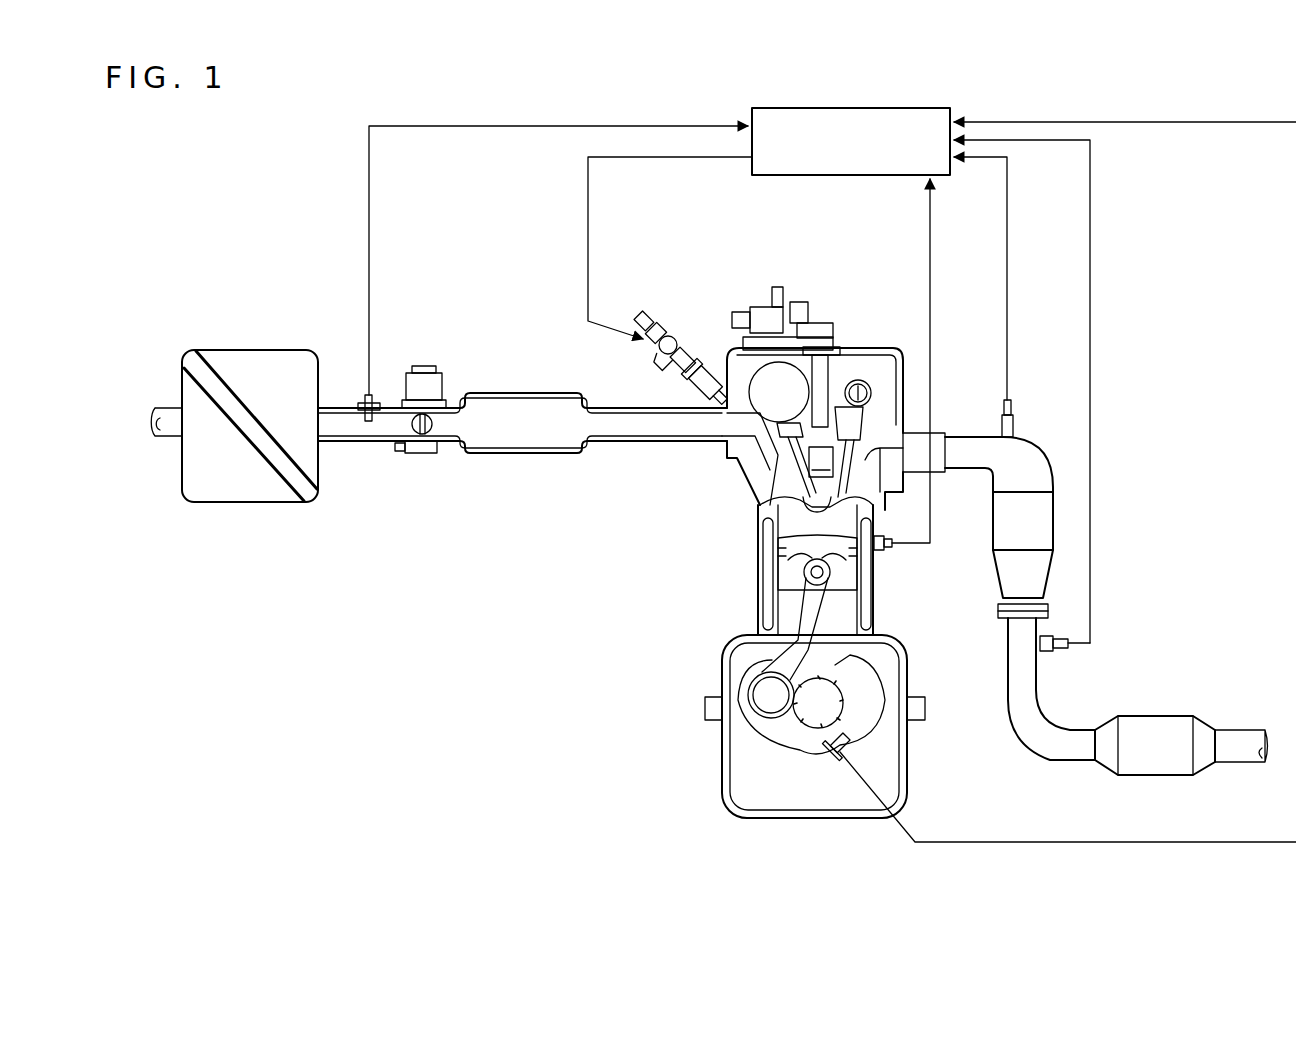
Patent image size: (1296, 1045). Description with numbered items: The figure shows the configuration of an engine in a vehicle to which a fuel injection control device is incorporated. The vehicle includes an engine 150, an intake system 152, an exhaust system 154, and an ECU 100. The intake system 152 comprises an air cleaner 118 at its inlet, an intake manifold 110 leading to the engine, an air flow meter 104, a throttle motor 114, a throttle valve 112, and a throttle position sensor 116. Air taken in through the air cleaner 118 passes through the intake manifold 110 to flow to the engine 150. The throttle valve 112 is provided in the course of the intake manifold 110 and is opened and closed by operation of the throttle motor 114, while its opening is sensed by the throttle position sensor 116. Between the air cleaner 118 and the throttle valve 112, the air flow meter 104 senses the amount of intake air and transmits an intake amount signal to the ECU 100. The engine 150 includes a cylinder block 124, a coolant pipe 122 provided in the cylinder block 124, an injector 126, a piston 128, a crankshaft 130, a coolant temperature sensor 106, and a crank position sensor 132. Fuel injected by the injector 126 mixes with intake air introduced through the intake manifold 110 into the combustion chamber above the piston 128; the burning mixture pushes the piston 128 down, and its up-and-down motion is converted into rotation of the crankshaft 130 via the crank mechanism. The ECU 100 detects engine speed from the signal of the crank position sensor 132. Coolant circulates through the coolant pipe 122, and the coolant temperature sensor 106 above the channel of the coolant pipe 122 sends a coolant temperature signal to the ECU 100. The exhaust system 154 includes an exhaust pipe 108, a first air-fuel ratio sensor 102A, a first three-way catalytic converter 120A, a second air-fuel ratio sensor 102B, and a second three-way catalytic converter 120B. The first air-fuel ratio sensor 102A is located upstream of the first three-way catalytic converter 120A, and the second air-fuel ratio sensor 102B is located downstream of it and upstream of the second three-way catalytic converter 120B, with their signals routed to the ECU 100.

The ECU 100 is at (893, 108).
The first air-fuel ratio sensor 102A is at (1015, 418).
The second air-fuel ratio sensor 102B is at (1060, 652).
The air flow meter 104 is at (364, 403).
The coolant temperature sensor 106 is at (890, 550).
The exhaust pipe 108 is at (962, 433).
The intake manifold 110 is at (640, 407).
The throttle valve 112 is at (437, 452).
The throttle motor 114 is at (440, 380).
The throttle position sensor 116 is at (405, 453).
The air cleaner 118 is at (306, 497).
The first three-way catalytic converter 120A is at (1007, 510).
The second three-way catalytic converter 120B is at (1168, 716).
The coolant pipe 122 is at (868, 600).
The cylinder block 124 is at (762, 522).
The injector 126 is at (688, 372).
The piston 128 is at (788, 580).
The crankshaft 130 is at (872, 734).
The crank position sensor 132 is at (880, 808).
The engine 150 is at (888, 344).
The intake system 152 is at (531, 320).
The exhaust system 154 is at (977, 400).